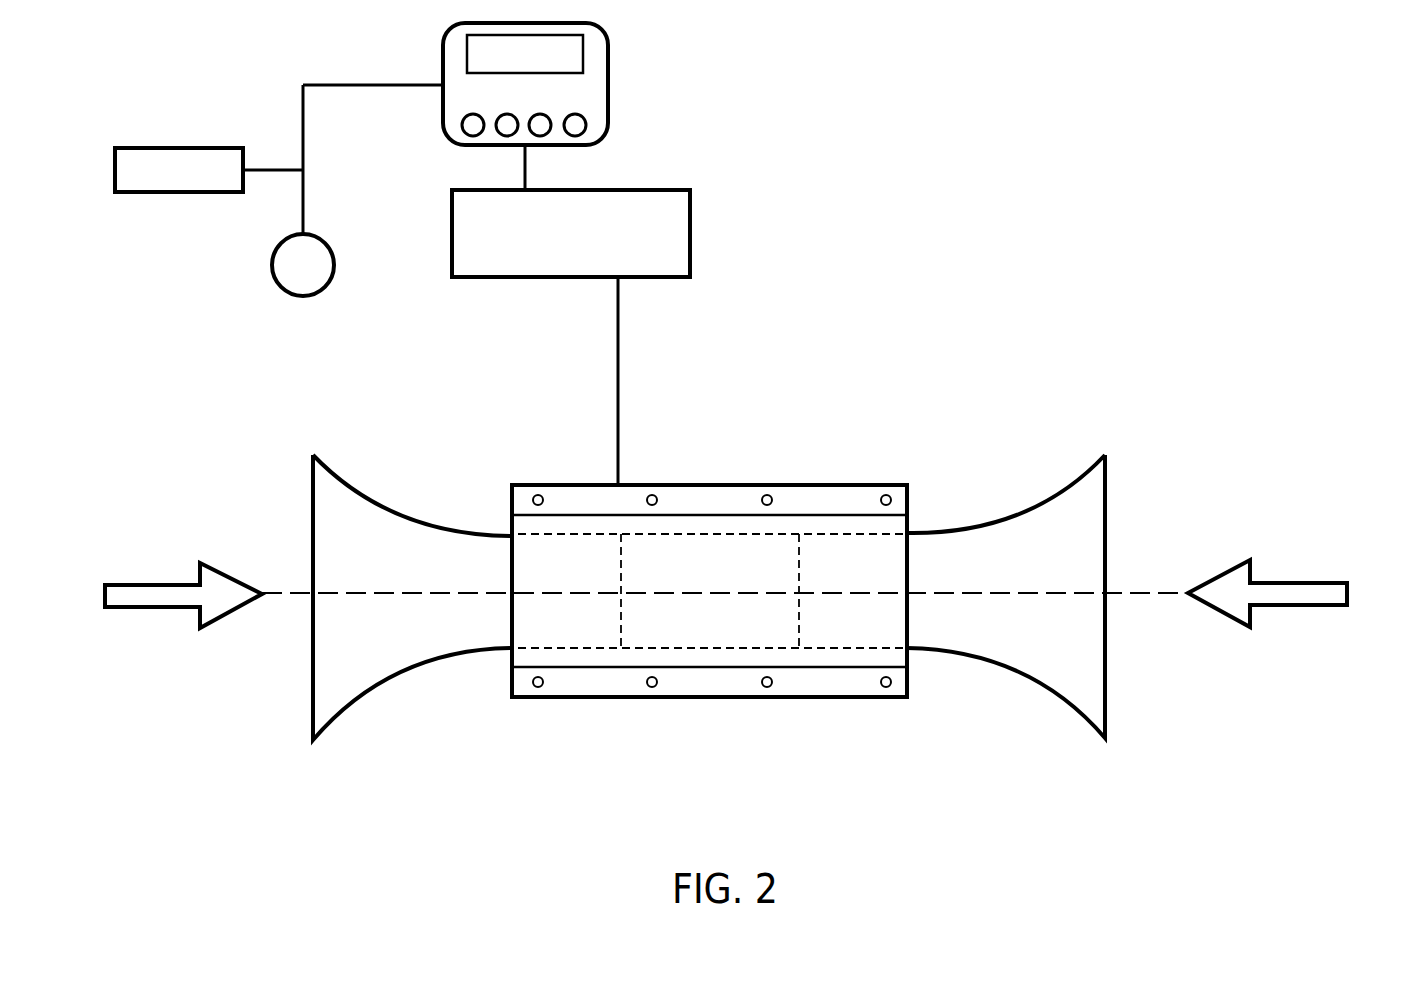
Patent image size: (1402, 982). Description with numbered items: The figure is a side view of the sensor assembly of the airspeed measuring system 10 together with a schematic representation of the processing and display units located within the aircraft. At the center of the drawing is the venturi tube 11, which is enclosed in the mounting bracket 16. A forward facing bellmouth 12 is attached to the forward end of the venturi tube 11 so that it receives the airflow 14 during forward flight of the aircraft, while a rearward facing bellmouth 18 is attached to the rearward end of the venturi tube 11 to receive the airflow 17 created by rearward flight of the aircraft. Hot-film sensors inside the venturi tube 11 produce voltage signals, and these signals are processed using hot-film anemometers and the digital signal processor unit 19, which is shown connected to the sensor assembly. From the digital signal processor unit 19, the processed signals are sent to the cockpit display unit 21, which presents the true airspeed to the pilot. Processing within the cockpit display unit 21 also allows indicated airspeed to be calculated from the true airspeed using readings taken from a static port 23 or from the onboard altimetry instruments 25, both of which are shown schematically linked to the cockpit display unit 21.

The airspeed measuring system 10 is at (753, 536).
The venturi tube 11 is at (711, 663).
The forward facing bellmouth 12 is at (411, 565).
The airflow 14 is at (173, 649).
The mounting bracket 16 is at (735, 543).
The airflow 17 is at (1283, 561).
The rearward facing bellmouth 18 is at (1075, 575).
The digital signal processor unit 19 is at (597, 207).
The cockpit display unit 21 is at (583, 84).
The static port 23 is at (262, 303).
The onboard altimetry instruments 25 is at (203, 207).